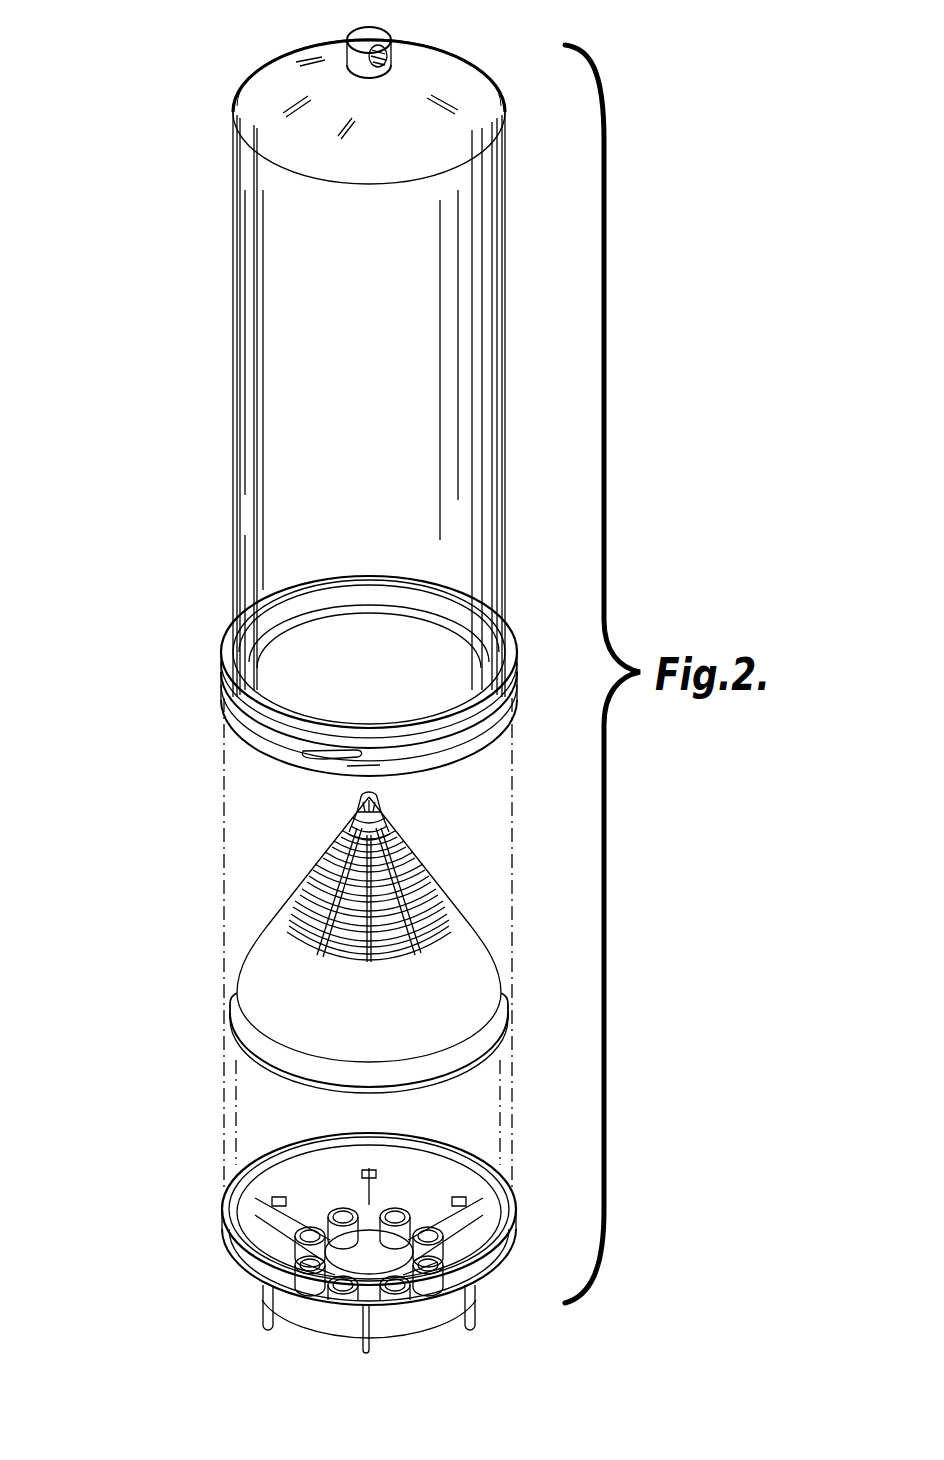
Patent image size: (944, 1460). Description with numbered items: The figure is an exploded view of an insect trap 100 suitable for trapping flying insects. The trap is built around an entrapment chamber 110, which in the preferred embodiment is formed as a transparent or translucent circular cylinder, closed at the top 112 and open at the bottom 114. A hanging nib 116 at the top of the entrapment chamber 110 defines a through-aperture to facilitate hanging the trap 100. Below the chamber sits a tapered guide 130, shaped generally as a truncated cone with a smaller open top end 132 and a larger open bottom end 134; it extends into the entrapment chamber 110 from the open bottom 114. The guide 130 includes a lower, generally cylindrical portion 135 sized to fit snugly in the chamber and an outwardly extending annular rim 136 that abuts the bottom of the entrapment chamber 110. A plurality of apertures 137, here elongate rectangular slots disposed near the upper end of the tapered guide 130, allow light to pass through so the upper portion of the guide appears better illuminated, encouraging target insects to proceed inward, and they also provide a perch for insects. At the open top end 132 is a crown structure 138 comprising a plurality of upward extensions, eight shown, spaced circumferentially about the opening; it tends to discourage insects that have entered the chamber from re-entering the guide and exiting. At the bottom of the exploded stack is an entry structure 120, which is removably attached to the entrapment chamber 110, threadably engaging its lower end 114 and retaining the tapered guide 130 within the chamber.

The insect trap 100 is at (120, 78).
The entrapment chamber 110 is at (492, 360).
The top 112 is at (262, 85).
The bottom 114 is at (490, 733).
The hanging nib 116 is at (355, 46).
The entry structure 120 is at (213, 1200).
The tapered guide 130 is at (278, 843).
The open top end 132 is at (353, 797).
The open bottom end 134 is at (436, 1085).
The cylindrical portion 135 is at (308, 1068).
The annular rim 136 is at (500, 1005).
The apertures 137 is at (313, 880).
The crown structure 138 is at (385, 797).